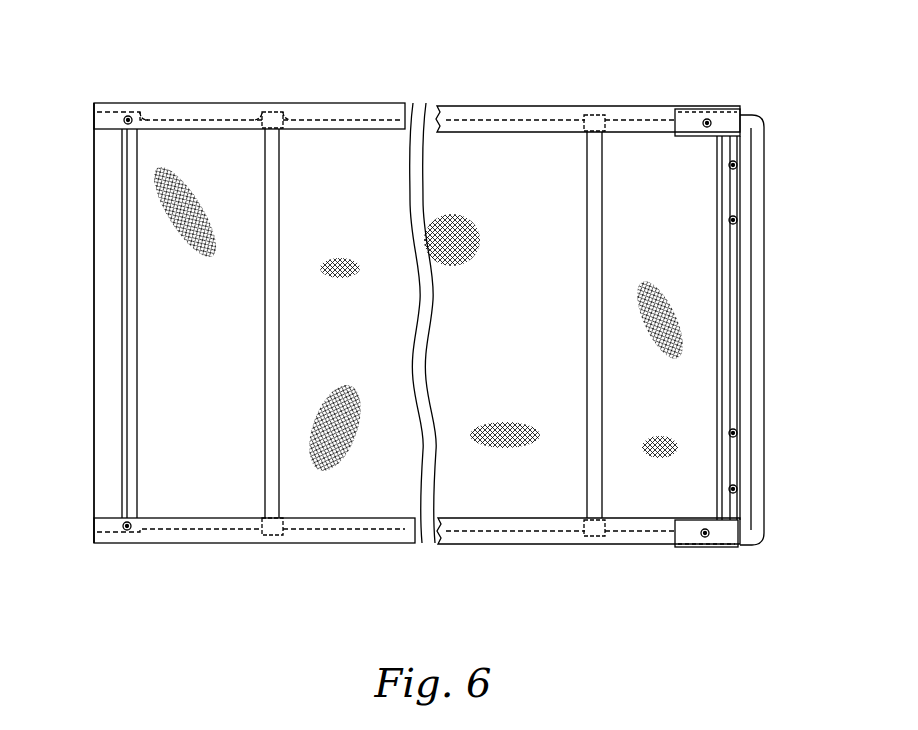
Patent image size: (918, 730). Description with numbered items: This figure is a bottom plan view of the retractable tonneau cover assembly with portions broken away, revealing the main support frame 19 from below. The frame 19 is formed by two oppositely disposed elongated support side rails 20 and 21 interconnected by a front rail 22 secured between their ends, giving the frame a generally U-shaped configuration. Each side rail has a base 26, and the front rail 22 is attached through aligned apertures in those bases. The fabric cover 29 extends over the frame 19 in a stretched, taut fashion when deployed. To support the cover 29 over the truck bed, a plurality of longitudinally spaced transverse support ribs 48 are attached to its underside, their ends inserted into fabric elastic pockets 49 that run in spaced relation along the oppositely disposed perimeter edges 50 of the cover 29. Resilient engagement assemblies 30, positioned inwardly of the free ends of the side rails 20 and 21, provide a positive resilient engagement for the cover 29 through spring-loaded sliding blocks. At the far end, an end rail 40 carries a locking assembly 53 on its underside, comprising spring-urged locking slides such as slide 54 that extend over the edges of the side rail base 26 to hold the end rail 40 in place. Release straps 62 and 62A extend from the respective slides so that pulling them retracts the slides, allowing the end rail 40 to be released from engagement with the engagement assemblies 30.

The main support frame 19 is at (467, 86).
The support side rail 20 is at (181, 95).
The support side rail 21 is at (158, 560).
The front rail 22 is at (100, 478).
The side rail base 26 is at (240, 110).
The fabric cover 29 is at (210, 455).
The resilient engagement assembly 30 is at (735, 100).
The end rail 40 is at (757, 293).
The transverse support rib 48 is at (275, 232).
The fabric elastic pocket 49 is at (290, 110).
The perimeter edge 50 is at (417, 103).
The locking assembly 53 is at (738, 153).
The locking slide 54 is at (732, 508).
The release strap 62 is at (735, 192).
The release strap 62A is at (732, 461).